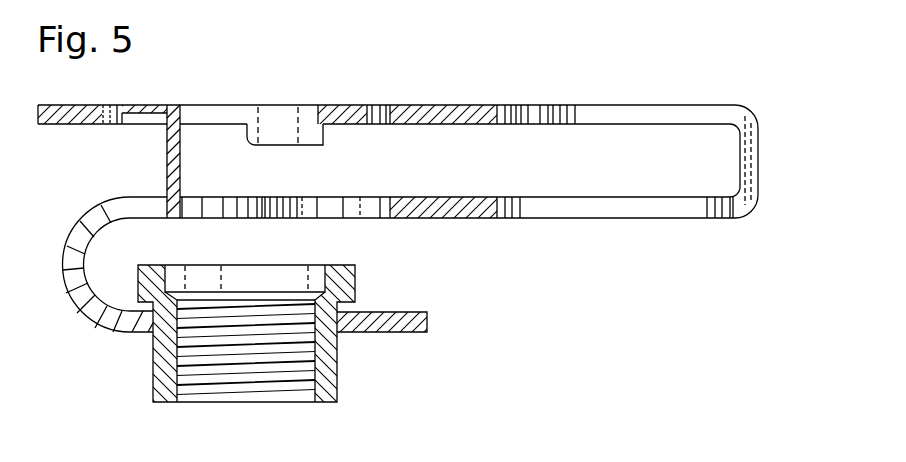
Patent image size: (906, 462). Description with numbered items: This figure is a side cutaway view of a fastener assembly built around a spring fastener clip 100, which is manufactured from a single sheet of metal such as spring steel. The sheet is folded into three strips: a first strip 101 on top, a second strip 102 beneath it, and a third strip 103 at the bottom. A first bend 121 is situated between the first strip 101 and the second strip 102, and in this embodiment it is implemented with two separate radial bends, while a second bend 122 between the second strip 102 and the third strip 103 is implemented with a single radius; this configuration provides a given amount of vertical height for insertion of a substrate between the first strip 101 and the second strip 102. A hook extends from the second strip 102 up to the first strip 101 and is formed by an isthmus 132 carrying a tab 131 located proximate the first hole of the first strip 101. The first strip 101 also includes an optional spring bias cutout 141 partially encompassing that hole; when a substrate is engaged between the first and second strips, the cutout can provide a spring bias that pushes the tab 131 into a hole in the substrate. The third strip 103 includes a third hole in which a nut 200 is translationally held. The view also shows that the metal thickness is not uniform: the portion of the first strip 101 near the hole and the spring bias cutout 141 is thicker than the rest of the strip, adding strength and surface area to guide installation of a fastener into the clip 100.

The spring fastener clip 100 is at (624, 68).
The first strip 101 is at (452, 105).
The second strip 102 is at (428, 219).
The third strip 103 is at (373, 333).
The first bend 121 is at (760, 176).
The second bend 122 is at (63, 258).
The tab 131 is at (157, 104).
The isthmus 132 is at (181, 158).
The spring bias cutout 141 is at (385, 106).
The nut 200 is at (137, 366).